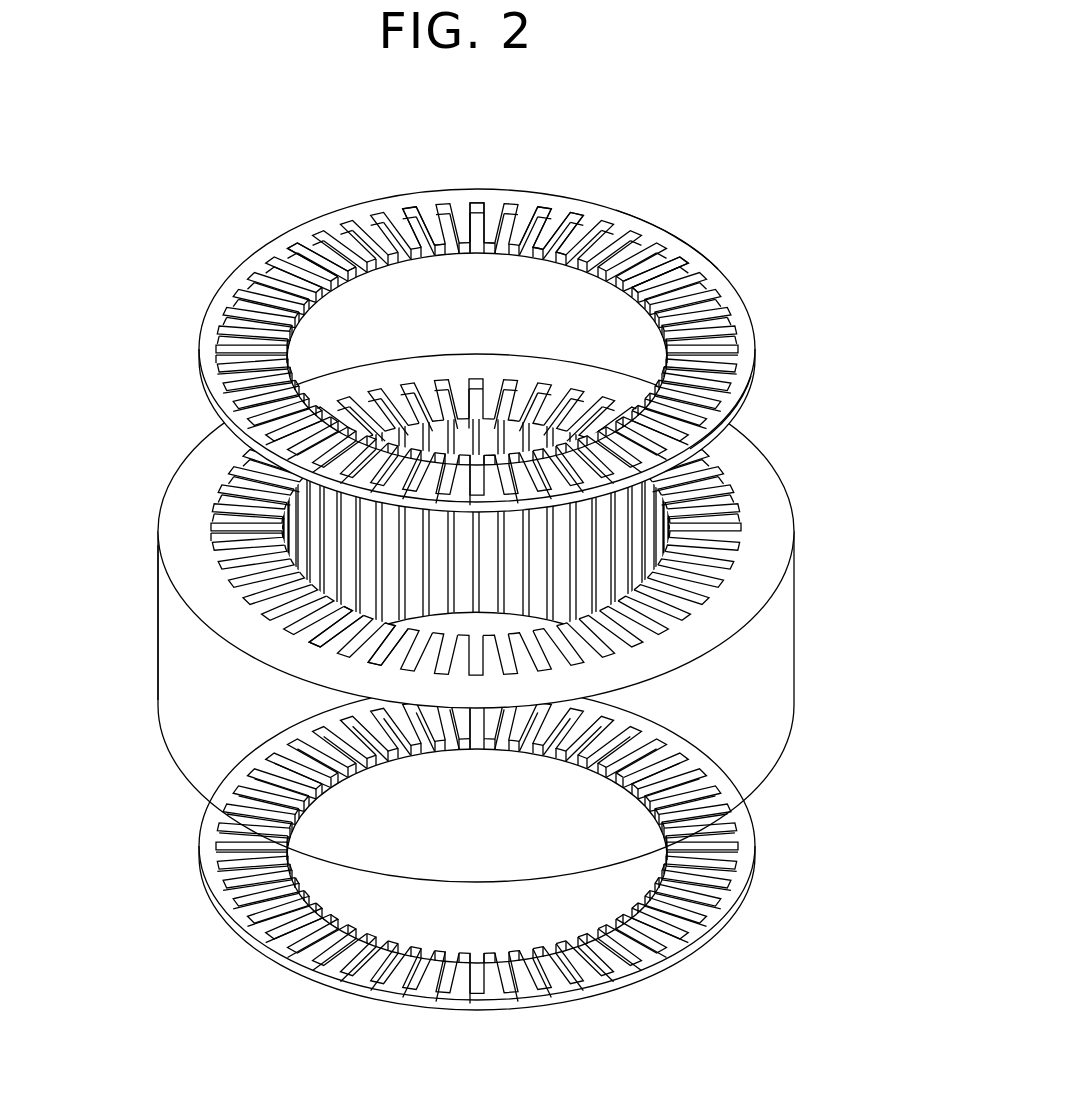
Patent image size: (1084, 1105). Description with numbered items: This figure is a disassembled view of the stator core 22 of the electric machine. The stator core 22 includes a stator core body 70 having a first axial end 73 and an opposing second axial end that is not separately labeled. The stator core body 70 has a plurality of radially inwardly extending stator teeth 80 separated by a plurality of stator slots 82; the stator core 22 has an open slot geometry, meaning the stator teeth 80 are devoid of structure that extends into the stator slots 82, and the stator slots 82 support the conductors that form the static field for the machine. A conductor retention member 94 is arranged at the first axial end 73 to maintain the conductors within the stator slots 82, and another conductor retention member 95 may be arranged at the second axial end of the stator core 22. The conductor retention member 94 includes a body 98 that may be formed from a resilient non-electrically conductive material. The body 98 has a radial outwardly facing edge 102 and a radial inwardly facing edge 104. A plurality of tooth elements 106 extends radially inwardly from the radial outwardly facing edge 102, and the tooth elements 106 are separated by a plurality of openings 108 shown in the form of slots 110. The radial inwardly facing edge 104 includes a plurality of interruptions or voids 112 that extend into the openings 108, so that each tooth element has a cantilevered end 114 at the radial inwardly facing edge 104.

The stator core 22 is at (143, 453).
The stator core body 70 is at (747, 723).
The first axial end 73 is at (178, 517).
The stator teeth 80 is at (343, 650).
The stator slots 82 is at (383, 660).
The conductor retention member 94 is at (292, 190).
The conductor retention member 95 is at (697, 1000).
The body 98 is at (662, 226).
The radial outwardly facing edge 102 is at (745, 403).
The radial inwardly facing edge 104 is at (416, 253).
The tooth elements 106 is at (355, 287).
The openings 108 is at (525, 259).
The slots 110 is at (528, 243).
The interruptions or voids 112 is at (601, 289).
The cantilevered end 114 is at (459, 240).